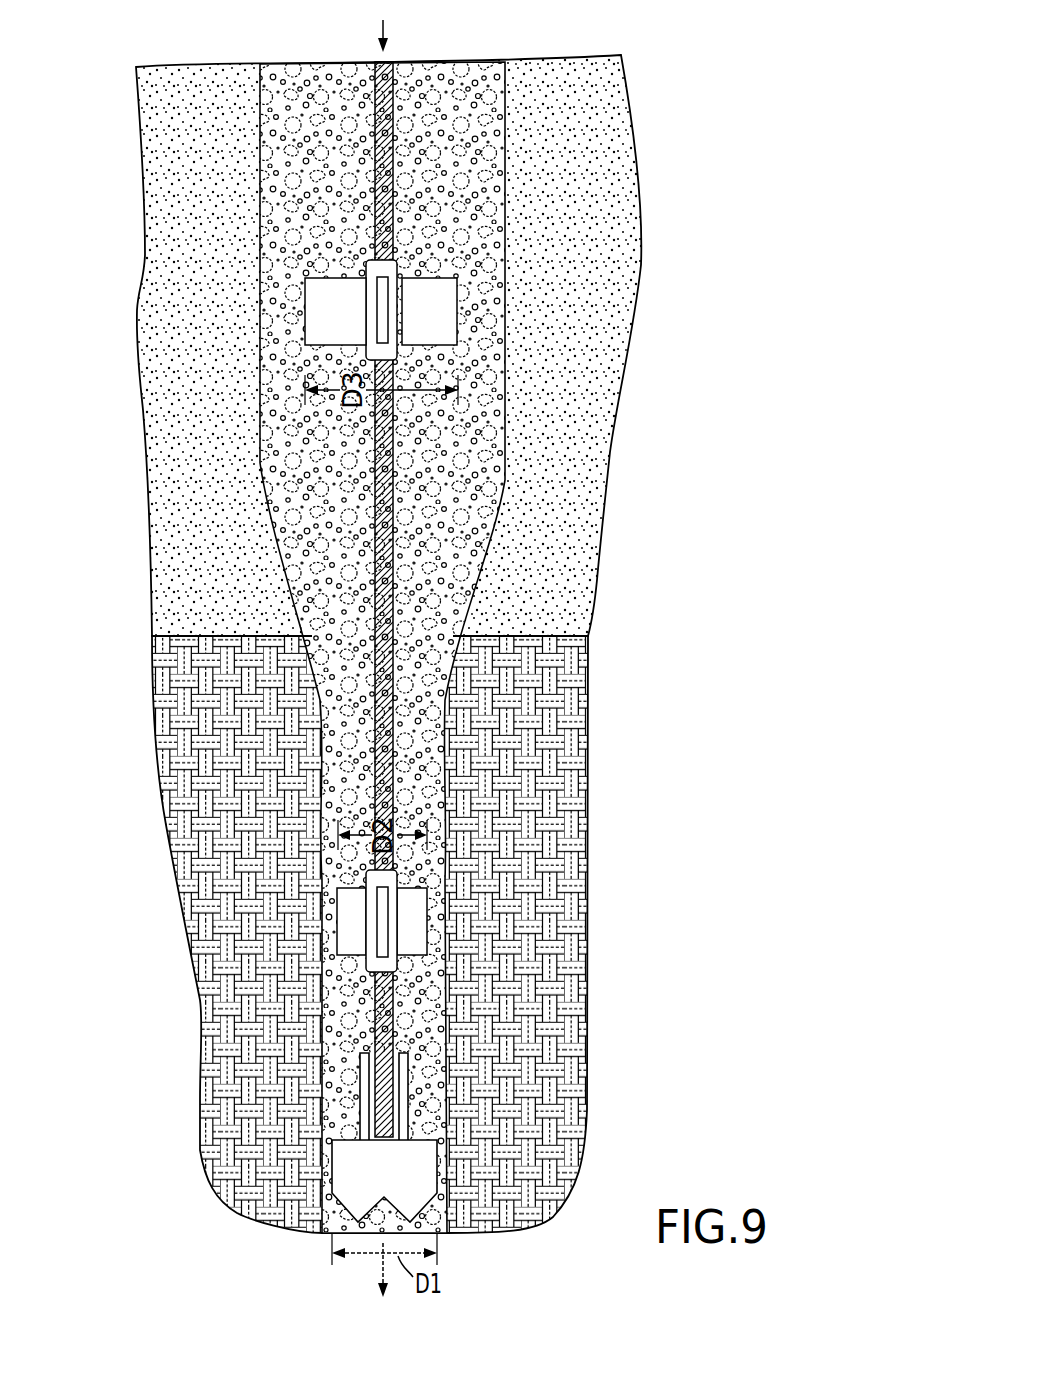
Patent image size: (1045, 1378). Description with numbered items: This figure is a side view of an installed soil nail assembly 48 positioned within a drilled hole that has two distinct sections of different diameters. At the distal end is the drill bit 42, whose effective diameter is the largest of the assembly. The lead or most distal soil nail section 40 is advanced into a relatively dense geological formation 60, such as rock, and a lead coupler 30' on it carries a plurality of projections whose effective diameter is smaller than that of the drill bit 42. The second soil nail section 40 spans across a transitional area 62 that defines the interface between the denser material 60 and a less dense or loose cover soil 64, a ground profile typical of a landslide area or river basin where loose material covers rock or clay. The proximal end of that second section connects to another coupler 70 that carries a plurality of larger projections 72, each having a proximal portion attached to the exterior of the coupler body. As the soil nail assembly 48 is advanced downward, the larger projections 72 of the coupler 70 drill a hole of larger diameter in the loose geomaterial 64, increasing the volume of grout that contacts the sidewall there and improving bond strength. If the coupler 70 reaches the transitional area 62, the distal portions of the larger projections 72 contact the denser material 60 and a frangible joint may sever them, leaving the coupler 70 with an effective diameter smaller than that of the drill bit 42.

The soil nail section 40 is at (386, 153).
The drill bit 42 is at (395, 1184).
The soil nail assembly 48 is at (680, 736).
The dense geological formation 60 is at (224, 712).
The transitional area 62 is at (182, 636).
The loose cover soil 64 is at (212, 364).
The coupler 70 is at (488, 268).
The larger projections 72 is at (347, 321).
The lead coupler 30' is at (452, 915).